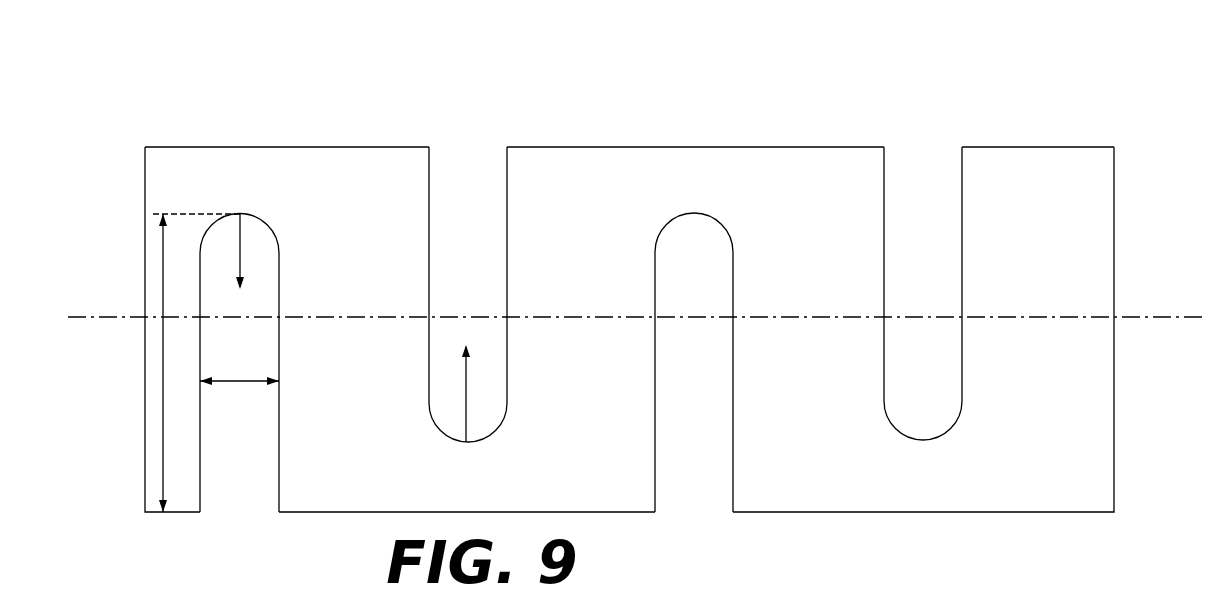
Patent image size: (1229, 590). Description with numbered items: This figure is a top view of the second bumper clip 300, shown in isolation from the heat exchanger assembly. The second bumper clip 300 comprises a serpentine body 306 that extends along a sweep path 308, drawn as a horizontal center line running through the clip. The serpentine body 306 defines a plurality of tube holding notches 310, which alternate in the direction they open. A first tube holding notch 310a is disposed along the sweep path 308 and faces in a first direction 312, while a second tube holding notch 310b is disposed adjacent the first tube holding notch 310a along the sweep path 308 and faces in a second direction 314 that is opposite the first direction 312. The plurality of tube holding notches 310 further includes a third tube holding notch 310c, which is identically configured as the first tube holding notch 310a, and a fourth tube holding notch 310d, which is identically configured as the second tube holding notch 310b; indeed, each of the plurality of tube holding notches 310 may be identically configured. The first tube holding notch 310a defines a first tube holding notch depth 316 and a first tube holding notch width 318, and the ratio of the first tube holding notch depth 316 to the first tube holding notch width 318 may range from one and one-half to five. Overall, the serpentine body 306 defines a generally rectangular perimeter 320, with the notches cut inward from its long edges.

The second bumper clip 300 is at (628, 78).
The serpentine body 306 is at (781, 469).
The sweep path 308 is at (1190, 320).
The tube holding notches 310 is at (437, 155).
The first tube holding notch 310a is at (212, 490).
The second tube holding notch 310b is at (490, 172).
The third tube holding notch 310c is at (670, 490).
The fourth tube holding notch 310d is at (951, 170).
The first direction 312 is at (240, 243).
The second direction 314 is at (467, 392).
The first tube holding notch depth 316 is at (163, 381).
The first tube holding notch width 318 is at (237, 385).
The generally rectangular perimeter 320 is at (766, 146).